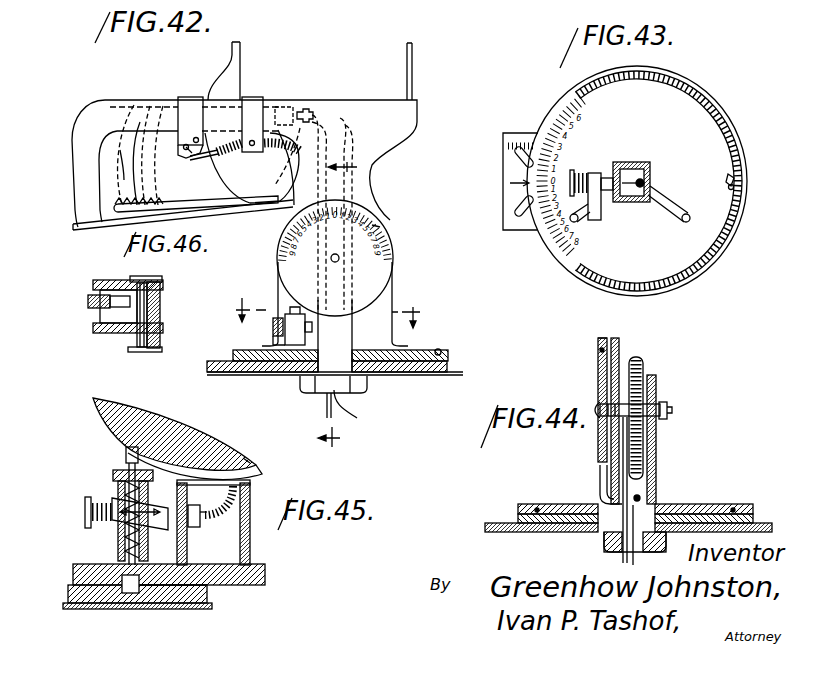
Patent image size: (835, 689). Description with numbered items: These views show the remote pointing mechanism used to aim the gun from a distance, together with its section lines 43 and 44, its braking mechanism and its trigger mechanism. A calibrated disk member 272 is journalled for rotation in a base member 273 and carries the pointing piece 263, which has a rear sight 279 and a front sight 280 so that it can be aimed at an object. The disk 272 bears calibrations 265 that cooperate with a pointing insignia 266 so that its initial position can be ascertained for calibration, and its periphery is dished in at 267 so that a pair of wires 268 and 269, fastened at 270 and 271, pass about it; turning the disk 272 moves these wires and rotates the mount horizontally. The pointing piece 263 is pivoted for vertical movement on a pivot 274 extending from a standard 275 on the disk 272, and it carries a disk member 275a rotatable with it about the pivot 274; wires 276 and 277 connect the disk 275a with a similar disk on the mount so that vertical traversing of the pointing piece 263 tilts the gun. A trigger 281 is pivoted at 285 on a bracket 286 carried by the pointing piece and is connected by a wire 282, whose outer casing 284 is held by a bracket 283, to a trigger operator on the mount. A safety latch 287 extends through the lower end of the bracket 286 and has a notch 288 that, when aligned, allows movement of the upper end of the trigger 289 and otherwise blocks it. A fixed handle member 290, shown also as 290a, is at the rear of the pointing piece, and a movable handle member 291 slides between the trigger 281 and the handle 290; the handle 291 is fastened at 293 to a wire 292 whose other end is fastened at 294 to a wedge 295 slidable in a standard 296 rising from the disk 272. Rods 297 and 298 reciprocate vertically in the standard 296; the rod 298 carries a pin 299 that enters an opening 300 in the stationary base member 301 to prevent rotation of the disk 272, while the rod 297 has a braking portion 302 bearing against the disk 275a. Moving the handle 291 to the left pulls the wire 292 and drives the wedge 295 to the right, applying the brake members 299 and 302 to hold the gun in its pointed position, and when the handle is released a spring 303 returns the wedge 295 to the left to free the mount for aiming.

In FIG. 42, the section line 43— 43 is at (333, 316).
In FIG. 42, the section line 44— 44 is at (339, 302).
In FIG. 42, the pointing piece 263 is at (372, 185).
In FIG. 43, the calibrations 265 is at (550, 151).
In FIG. 43, the pointing insignia 266 is at (514, 185).
In FIG. 44, the dished-in periphery 267 is at (550, 505).
In FIG. 42, the wire 268 is at (262, 376).
In FIG. 43, the wire 268 is at (533, 220).
In FIG. 42, the wire 269 is at (438, 355).
In FIG. 43, the wire 269 is at (536, 140).
In FIG. 43, the wire fastening 270 is at (735, 187).
In FIG. 43, the wire fastening 271 is at (734, 176).
In FIG. 42, the disk member 272 is at (264, 376).
In FIG. 43, the disk member 272 is at (700, 133).
In FIG. 44, the disk member 272 is at (570, 513).
In FIG. 45, the disk member 272 is at (252, 565).
In FIG. 42, the base member 273 is at (449, 369).
In FIG. 42, the pivot 274 is at (340, 258).
In FIG. 44, the pivot 274 is at (669, 412).
In FIG. 42, the standard 275 is at (352, 331).
In FIG. 43, the standard 275 is at (656, 166).
In FIG. 44, the standard 275 is at (657, 450).
In FIG. 42, the disk member 275a is at (380, 226).
In FIG. 44, the disk member 275a is at (598, 384).
In FIG. 45, the disk member 275a is at (244, 459).
In FIG. 42, the wire 276 is at (277, 284).
In FIG. 42, the wire 277 is at (374, 328).
In FIG. 42, the rear sight 279 is at (238, 53).
In FIG. 42, the front sight 280 is at (413, 58).
In FIG. 42, the trigger 281 is at (192, 153).
In FIG. 42, the wire 282 is at (207, 160).
In FIG. 42, the bracket 283 is at (258, 97).
In FIG. 42, the outer casing 284 is at (276, 153).
In FIG. 42, the trigger pivot 285 is at (186, 147).
In FIG. 46, the trigger pivot 285 is at (97, 328).
In FIG. 42, the bracket 286 is at (190, 97).
In FIG. 46, the safety latch 287 is at (151, 352).
In FIG. 46, the notch 288 is at (138, 315).
In FIG. 46, the upper end of trigger 289 is at (132, 302).
In FIG. 42, the fixed handle member 290 is at (76, 160).
In FIG. 42, the fixed handle member 290a is at (128, 225).
In FIG. 42, the movable handle member 291 is at (122, 150).
In FIG. 42, the wire 292 is at (313, 110).
In FIG. 45, the wire 292 is at (184, 538).
In FIG. 42, the wire fastening 293 is at (284, 106).
In FIG. 45, the wire fastening 294 is at (156, 513).
In FIG. 45, the wedge 295 is at (117, 497).
In FIG. 45, the standard 296 is at (118, 545).
In FIG. 45, the rod 297 is at (128, 452).
In FIG. 45, the rod 298 is at (118, 587).
In FIG. 45, the pin 299 is at (136, 587).
In FIG. 45, the opening 300 is at (130, 600).
In FIG. 45, the stationary base member 301 is at (206, 590).
In FIG. 45, the braking portion 302 is at (125, 448).
In FIG. 45, the spring 303 is at (86, 503).